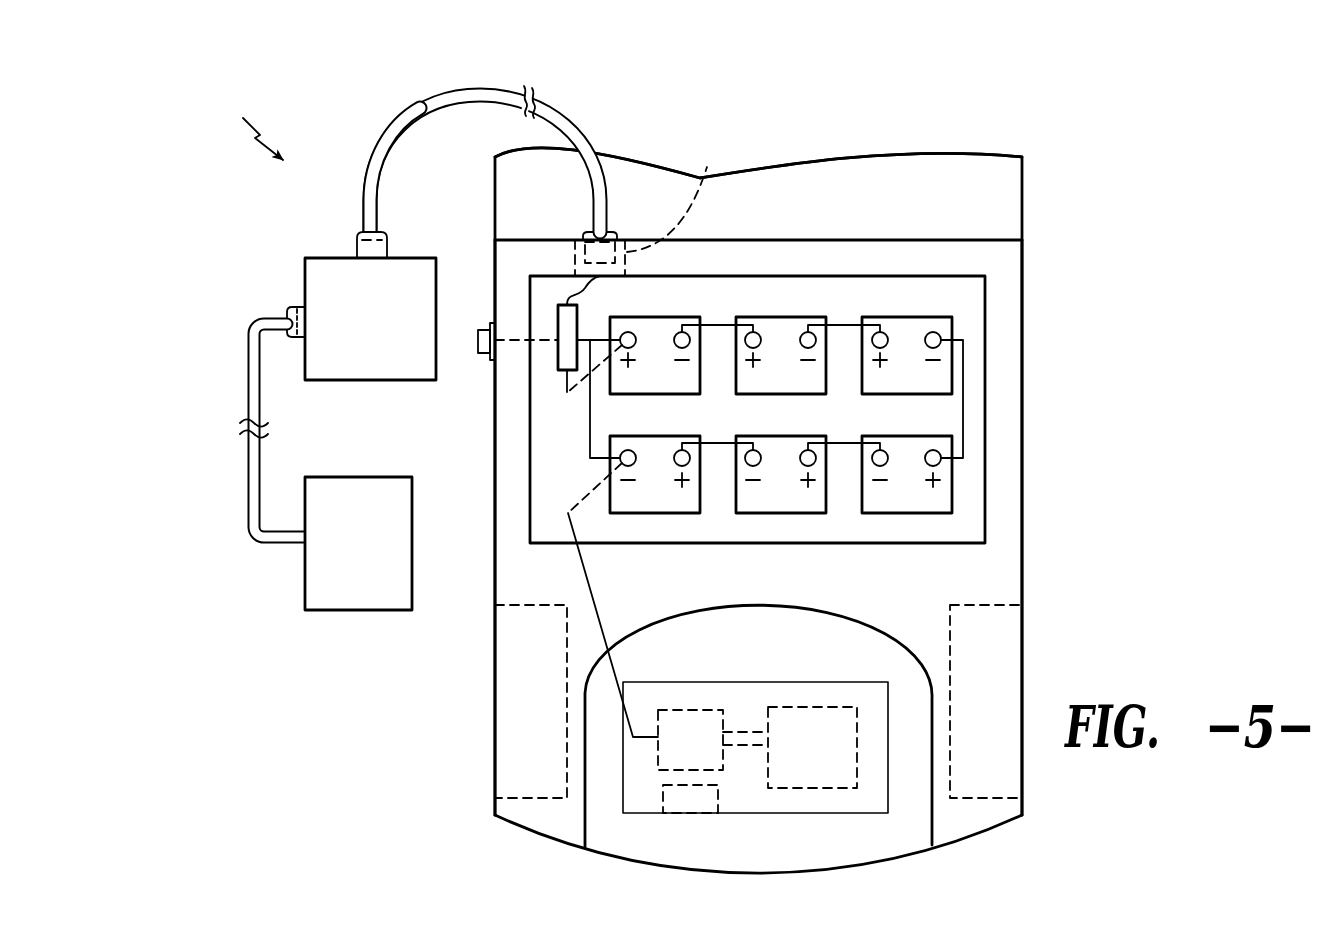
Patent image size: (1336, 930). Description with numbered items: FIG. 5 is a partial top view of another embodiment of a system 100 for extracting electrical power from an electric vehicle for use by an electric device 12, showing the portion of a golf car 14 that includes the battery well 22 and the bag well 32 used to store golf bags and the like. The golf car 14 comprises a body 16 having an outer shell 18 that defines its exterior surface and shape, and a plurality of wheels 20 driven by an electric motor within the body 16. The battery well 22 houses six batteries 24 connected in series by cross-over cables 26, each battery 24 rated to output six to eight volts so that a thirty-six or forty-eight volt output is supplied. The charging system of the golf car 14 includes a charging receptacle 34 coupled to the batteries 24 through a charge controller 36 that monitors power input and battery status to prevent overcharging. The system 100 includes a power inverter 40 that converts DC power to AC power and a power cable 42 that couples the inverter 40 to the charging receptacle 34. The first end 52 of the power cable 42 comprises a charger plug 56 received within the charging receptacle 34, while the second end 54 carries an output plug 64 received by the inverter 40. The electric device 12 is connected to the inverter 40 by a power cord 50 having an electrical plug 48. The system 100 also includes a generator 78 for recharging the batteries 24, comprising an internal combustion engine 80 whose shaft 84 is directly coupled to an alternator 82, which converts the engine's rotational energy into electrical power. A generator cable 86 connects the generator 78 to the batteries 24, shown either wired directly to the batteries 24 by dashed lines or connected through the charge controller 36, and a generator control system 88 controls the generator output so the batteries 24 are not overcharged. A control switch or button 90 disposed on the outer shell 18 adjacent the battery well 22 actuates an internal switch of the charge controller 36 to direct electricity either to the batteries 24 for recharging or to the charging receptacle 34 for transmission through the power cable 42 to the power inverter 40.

The system 100 is at (240, 123).
The electric device 12 is at (340, 554).
The golf car 14 is at (904, 150).
The body 16 is at (758, 140).
The outer shell 18 is at (1022, 470).
The wheels 20 is at (522, 798).
The battery well 22 is at (812, 409).
The batteries 24 is at (648, 313).
The cross-over cables 26 is at (712, 317).
The bag well 32 is at (868, 838).
The charging receptacle 34 is at (672, 195).
The charge controller 36 is at (558, 318).
The power inverter 40 is at (352, 334).
The power cable 42 is at (578, 113).
The electrical plug 48 is at (290, 305).
The power cord 50 is at (248, 400).
The first end 52 is at (612, 205).
The second end 54 is at (366, 168).
The charger plug 56 is at (587, 233).
The output plug 64 is at (357, 250).
The generator 78 is at (838, 676).
The internal combustion engine 80 is at (798, 761).
The alternator 82 is at (676, 756).
The shaft 84 is at (750, 732).
The generator cable 86 is at (600, 612).
The generator control system 88 is at (663, 795).
The control switch or button 90 is at (478, 345).